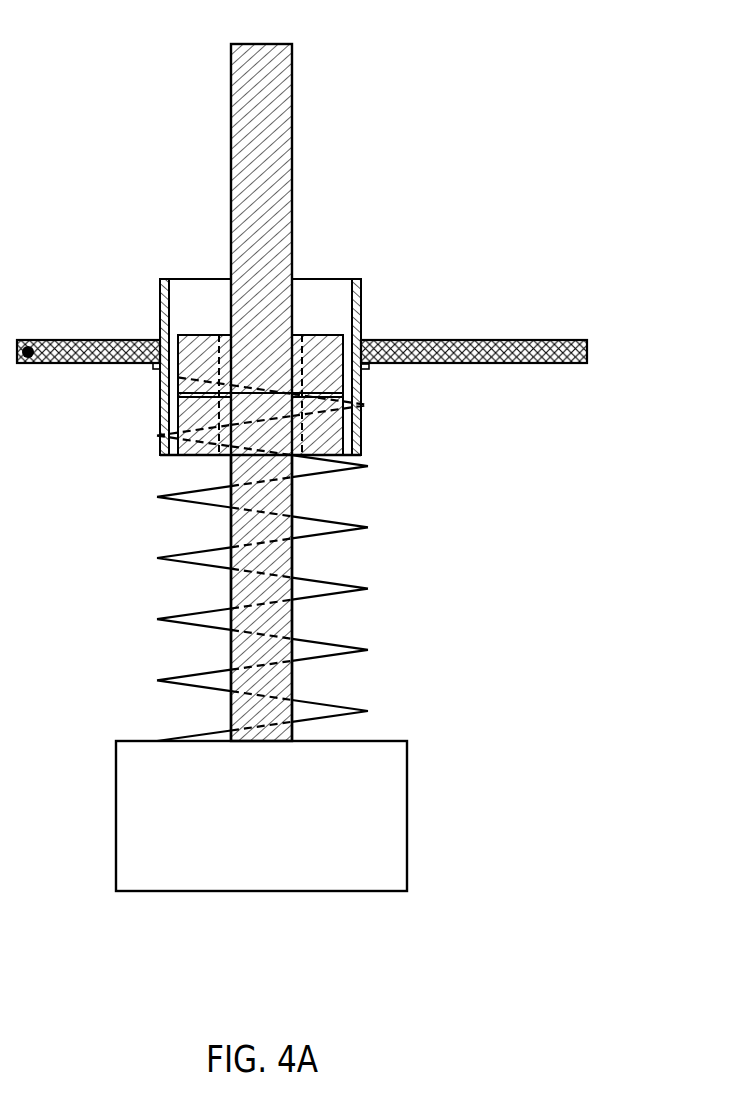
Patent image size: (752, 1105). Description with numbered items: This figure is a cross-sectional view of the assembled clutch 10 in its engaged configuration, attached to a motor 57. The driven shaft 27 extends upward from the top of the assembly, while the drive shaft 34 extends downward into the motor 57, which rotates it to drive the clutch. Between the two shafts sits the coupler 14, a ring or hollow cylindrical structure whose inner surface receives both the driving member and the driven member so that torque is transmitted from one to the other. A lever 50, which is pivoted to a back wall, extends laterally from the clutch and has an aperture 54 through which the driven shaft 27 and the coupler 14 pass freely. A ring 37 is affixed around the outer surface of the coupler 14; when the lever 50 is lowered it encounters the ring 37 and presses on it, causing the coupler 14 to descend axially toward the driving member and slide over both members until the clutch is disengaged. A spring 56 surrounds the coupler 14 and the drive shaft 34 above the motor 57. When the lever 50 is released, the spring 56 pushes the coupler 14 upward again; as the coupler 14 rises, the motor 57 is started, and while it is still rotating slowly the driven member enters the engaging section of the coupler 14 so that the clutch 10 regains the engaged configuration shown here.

The clutch 10 is at (572, 148).
The driven shaft 27 is at (293, 77).
The aperture 54 is at (364, 340).
The lever 50 is at (588, 350).
The ring 37 is at (155, 368).
The coupler 14 is at (365, 367).
The spring 56 is at (368, 588).
The drive shaft 34 is at (293, 676).
The motor 57 is at (408, 770).